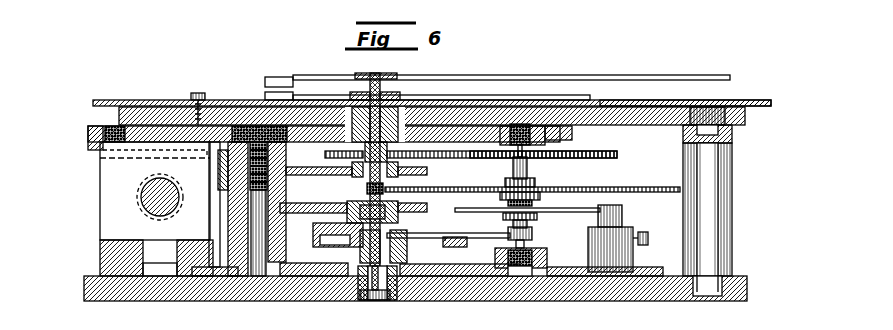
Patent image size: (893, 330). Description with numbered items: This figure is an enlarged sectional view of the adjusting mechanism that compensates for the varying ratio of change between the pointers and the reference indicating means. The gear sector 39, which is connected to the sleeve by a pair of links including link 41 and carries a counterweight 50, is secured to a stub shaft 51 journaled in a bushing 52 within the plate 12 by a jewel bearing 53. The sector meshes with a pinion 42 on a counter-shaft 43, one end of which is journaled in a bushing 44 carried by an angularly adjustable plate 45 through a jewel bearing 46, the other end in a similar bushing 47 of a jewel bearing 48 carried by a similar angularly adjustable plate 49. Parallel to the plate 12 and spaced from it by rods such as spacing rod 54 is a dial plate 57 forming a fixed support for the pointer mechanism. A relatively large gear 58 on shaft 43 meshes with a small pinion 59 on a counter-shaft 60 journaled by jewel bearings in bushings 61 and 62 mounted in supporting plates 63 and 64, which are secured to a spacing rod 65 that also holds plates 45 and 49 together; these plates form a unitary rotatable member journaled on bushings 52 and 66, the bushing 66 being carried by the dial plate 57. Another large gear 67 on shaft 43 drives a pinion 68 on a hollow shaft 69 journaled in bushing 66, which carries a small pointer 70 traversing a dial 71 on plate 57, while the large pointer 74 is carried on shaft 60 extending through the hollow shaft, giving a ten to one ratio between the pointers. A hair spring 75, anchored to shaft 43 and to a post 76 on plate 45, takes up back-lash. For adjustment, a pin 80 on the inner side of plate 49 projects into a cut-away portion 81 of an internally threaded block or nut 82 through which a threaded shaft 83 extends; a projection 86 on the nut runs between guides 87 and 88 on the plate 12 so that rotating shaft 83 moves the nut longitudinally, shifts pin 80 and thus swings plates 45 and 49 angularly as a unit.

The plate 12 is at (541, 299).
The gear sector 39 is at (418, 242).
The link 41 is at (445, 238).
The pinion 42 is at (533, 235).
The counter-shaft 43 is at (528, 168).
The bushing 44 is at (497, 256).
The angularly adjustable plate 45 is at (640, 274).
The jewel bearing 46 is at (542, 250).
The bushing 47 is at (545, 141).
The jewel bearing 48 is at (522, 133).
The angularly adjustable plate 49 is at (572, 128).
The counterweight 50 is at (336, 252).
The stub shaft 51 is at (398, 246).
The bushing 52 is at (397, 296).
The jewel bearing 53 is at (372, 298).
The spacing rod 54 is at (726, 214).
The dial plate 57 is at (168, 110).
The gear 58 is at (620, 185).
The pinion 59 is at (367, 190).
The counter-shaft 60 is at (385, 197).
The bushing 61 is at (420, 186).
The bushing 62 is at (395, 220).
The supporting plate 63 is at (304, 175).
The supporting plate 64 is at (300, 214).
The spacing rod 65 is at (280, 257).
The bushing 66 is at (419, 113).
The gear 67 is at (600, 153).
The pinion 68 is at (425, 156).
The hollow shaft 69 is at (331, 153).
The small pointer 70 is at (491, 95).
The dial 71 is at (629, 99).
The large pointer 74 is at (628, 82).
The hair spring 75 is at (562, 201).
The post 76 is at (625, 214).
The pin 80 is at (130, 149).
The cut-away portion 81 is at (110, 158).
The block or nut 82 is at (101, 205).
The threaded shaft 83 is at (173, 212).
The projection 86 is at (160, 253).
The guide 87 is at (103, 257).
The guide 88 is at (218, 255).